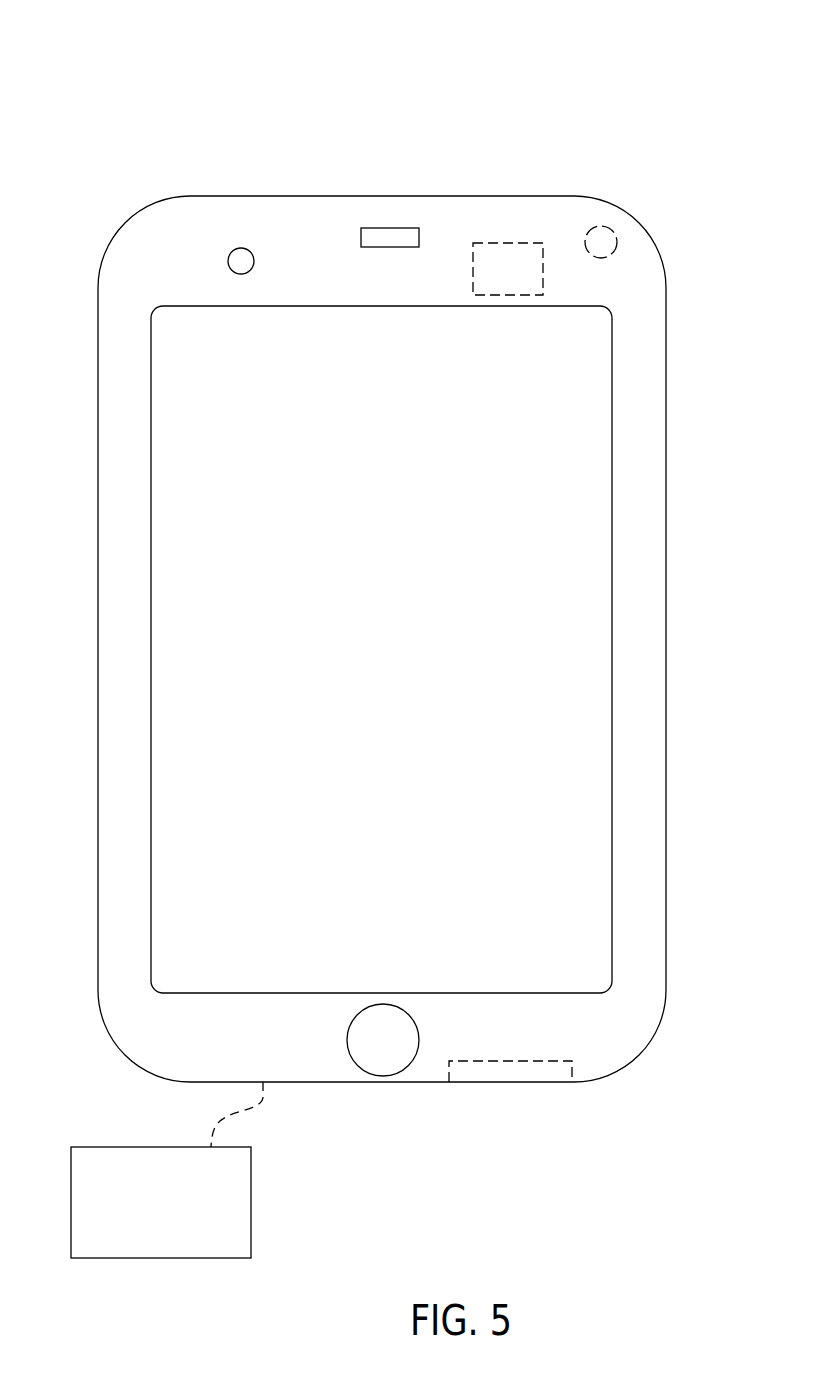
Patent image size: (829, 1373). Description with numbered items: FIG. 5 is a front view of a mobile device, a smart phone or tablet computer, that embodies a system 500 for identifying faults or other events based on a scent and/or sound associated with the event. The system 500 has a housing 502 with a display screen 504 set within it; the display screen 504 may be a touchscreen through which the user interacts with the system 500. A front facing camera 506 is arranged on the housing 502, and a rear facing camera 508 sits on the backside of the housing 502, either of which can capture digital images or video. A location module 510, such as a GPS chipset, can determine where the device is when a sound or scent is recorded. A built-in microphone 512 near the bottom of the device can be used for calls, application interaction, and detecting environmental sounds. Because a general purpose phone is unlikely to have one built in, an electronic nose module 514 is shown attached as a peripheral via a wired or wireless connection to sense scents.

The system 500 is at (594, 68).
The housing 502 is at (651, 312).
The display screen 504 is at (580, 525).
The front facing camera 506 is at (250, 250).
The rear facing camera 508 is at (609, 228).
The location module 510 is at (497, 243).
The built-in microphone 512 is at (518, 1068).
The electronic nose module 514 is at (232, 1194).